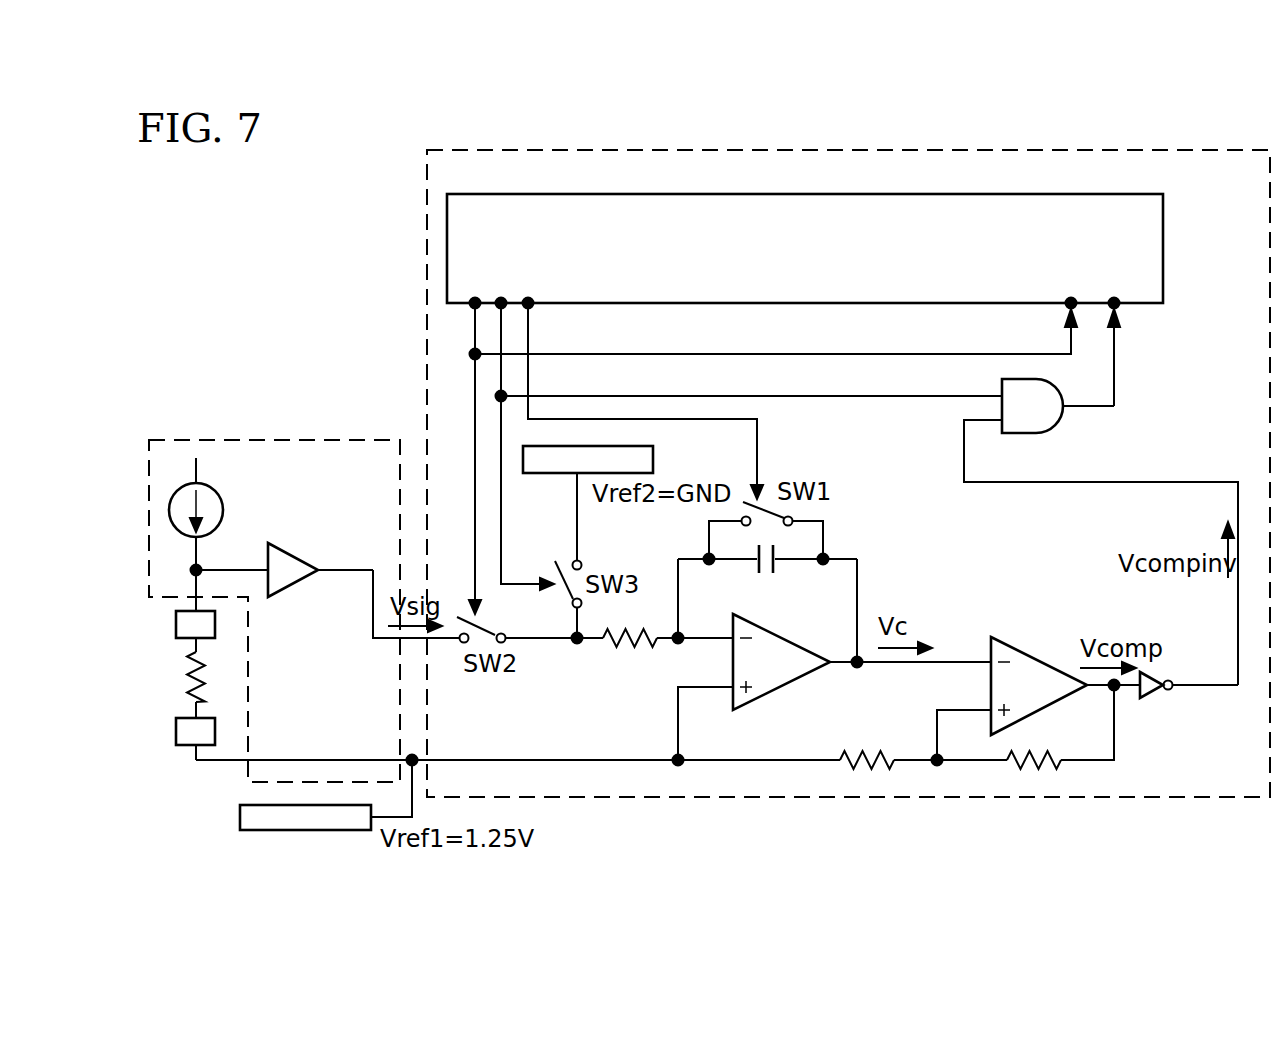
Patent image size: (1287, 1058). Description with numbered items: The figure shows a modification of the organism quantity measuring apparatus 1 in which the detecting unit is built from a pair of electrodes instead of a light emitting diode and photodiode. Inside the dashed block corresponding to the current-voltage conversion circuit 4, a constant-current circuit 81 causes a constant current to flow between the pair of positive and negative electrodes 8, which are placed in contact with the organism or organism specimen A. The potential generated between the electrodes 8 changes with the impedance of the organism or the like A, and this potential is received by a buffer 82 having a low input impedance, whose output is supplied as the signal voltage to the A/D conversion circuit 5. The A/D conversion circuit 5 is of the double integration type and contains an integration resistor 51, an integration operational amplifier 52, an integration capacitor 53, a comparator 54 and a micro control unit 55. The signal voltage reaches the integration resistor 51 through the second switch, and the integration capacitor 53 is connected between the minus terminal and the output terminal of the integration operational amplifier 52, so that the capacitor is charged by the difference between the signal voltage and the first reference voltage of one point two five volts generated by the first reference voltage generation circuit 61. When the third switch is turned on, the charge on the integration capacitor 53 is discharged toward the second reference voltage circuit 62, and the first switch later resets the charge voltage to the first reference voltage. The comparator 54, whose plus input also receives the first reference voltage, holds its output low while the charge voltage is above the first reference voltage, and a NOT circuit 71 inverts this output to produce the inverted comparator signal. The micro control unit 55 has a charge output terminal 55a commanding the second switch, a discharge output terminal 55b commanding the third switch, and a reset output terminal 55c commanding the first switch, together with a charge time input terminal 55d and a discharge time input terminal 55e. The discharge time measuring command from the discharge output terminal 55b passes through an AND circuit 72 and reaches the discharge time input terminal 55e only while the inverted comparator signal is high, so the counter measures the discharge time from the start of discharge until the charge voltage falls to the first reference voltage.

The organism quantity measuring apparatus 1 is at (390, 152).
The A/D conversion circuit 5 is at (427, 221).
The current-voltage conversion circuit 4 is at (212, 440).
The micro control unit 55 is at (1046, 194).
The charge output terminal 55a is at (475, 300).
The discharge output terminal 55b is at (501, 302).
The reset output terminal 55c is at (531, 303).
The charge time input terminal 55d is at (1071, 300).
The discharge time input terminal 55e is at (1114, 300).
The second reference voltage circuit 62 is at (654, 458).
The first reference voltage generation circuit 61 is at (240, 818).
The constant-current circuit 81 is at (224, 508).
The buffer 82 is at (302, 562).
The electrodes 8 is at (176, 623).
The organism or organism specimen A is at (196, 680).
The integration resistor 51 is at (630, 652).
The integration operational amplifier 52 is at (796, 684).
The integration capacitor 53 is at (766, 575).
The comparator 54 is at (1022, 645).
The NOT circuit 71 is at (1160, 668).
The AND circuit 72 is at (1066, 418).